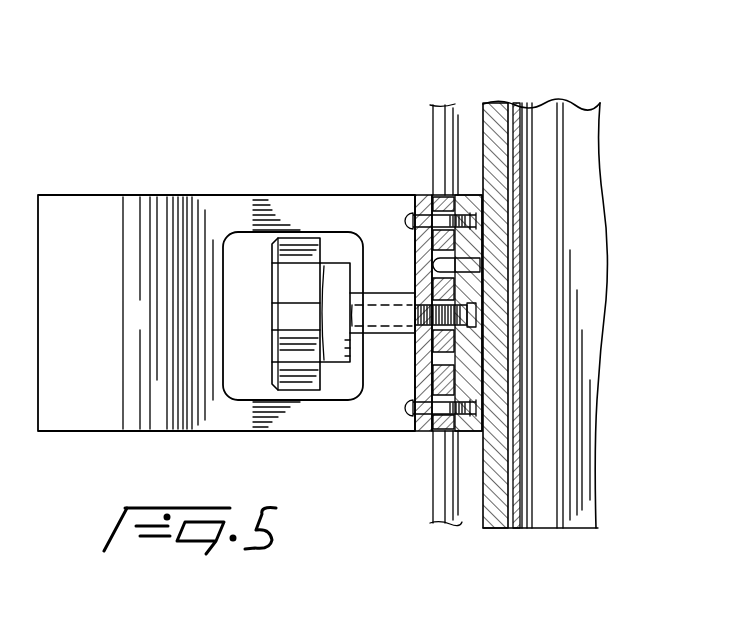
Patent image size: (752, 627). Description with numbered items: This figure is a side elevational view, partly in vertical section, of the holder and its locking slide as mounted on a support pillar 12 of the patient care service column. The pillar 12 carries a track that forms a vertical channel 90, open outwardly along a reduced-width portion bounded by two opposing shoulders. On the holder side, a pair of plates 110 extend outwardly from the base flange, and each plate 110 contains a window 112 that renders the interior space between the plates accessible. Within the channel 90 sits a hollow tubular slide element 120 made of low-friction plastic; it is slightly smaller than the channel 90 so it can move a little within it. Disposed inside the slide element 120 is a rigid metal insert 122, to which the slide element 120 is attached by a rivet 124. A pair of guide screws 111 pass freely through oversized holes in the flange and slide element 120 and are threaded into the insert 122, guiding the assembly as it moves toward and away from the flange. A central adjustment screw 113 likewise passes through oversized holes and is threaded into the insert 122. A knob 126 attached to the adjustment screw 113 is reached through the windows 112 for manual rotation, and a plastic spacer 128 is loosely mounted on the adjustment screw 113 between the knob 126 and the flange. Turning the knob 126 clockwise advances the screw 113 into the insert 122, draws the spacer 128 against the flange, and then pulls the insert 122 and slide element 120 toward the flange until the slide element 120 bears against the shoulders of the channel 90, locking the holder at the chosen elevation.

The upstanding support pillar 12 is at (608, 120).
The vertical channel 90 is at (455, 138).
The plate 110 is at (313, 196).
The guide screw 111 is at (406, 212).
The window 112 is at (250, 245).
The adjustment screw 113 is at (468, 318).
The slide element 120 is at (443, 427).
The rigid insert 122 is at (460, 200).
The rivet 124 is at (487, 243).
The knob 126 is at (298, 377).
The plastic spacer 128 is at (393, 330).